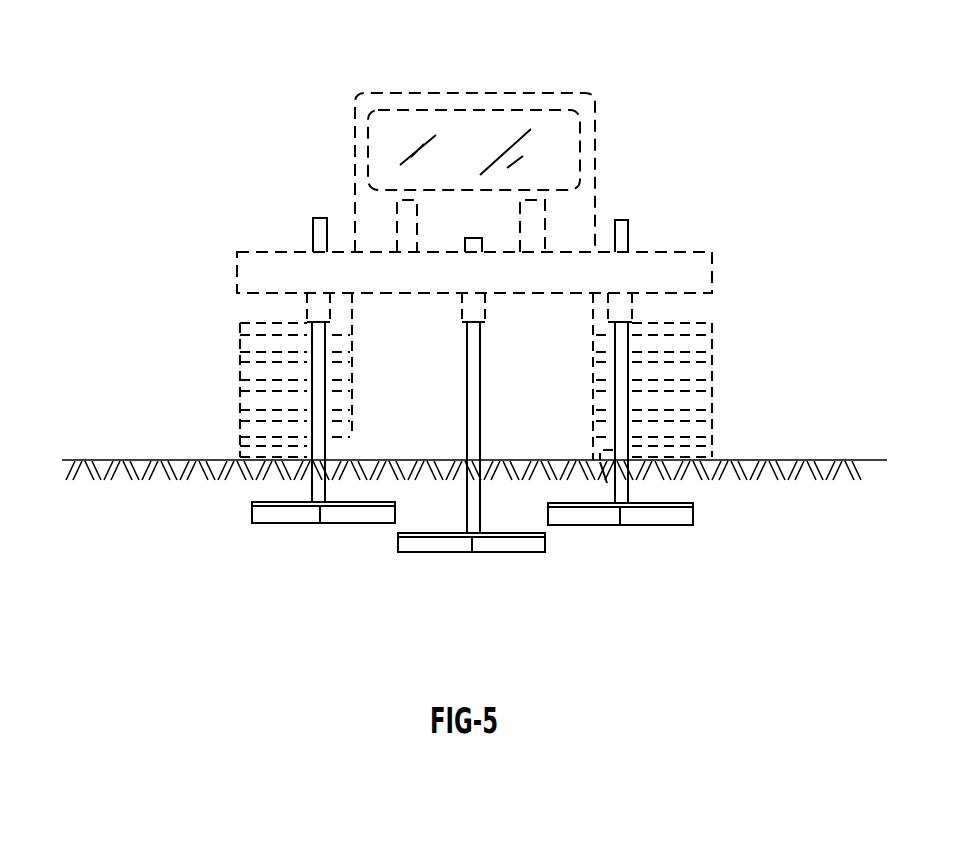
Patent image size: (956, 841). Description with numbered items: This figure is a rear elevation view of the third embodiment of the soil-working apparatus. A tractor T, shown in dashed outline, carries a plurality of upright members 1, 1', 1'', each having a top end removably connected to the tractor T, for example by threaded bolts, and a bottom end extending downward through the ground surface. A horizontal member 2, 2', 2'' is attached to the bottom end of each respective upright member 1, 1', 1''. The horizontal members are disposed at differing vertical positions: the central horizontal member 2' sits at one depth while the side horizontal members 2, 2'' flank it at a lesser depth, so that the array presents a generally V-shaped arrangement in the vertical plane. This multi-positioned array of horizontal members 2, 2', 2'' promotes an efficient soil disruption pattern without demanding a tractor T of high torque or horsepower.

The tractor T is at (638, 92).
The upright member 1 is at (259, 397).
The upright member 1' is at (511, 413).
The upright member 1'' is at (710, 398).
The horizontal member 2 is at (302, 558).
The horizontal member 2' is at (445, 590).
The horizontal member 2'' is at (644, 566).